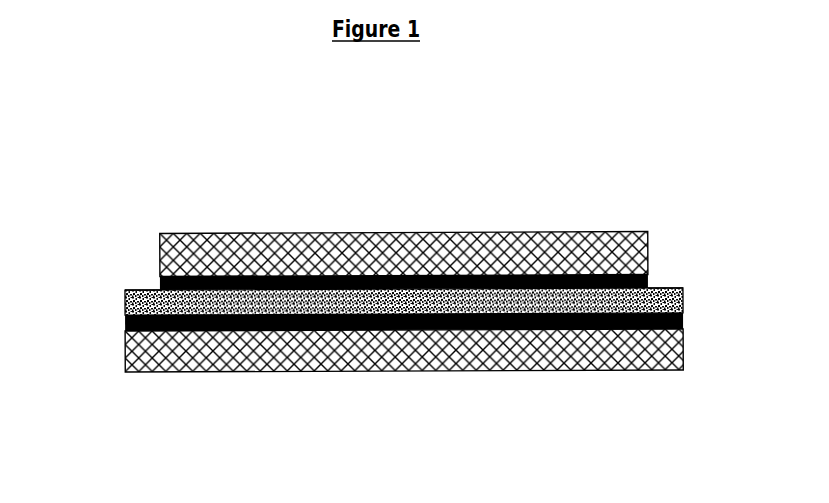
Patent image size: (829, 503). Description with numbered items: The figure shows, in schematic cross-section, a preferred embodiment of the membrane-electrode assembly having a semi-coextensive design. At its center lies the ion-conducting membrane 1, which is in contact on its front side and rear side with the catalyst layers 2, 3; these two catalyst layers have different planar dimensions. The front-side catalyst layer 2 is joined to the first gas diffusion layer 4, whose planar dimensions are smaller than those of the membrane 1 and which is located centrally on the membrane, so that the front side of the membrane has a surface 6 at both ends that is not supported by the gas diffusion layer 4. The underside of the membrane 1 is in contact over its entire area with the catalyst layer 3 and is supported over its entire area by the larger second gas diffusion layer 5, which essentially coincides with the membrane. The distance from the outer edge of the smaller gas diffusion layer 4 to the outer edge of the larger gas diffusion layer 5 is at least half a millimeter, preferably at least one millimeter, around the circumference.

The ion-conducting membrane 1 is at (183, 300).
The catalyst layer 2 is at (652, 287).
The catalyst layer 3 is at (683, 322).
The first gas diffusion layer 4 is at (440, 245).
The second gas diffusion layer 5 is at (344, 366).
The surface 6 is at (142, 288).